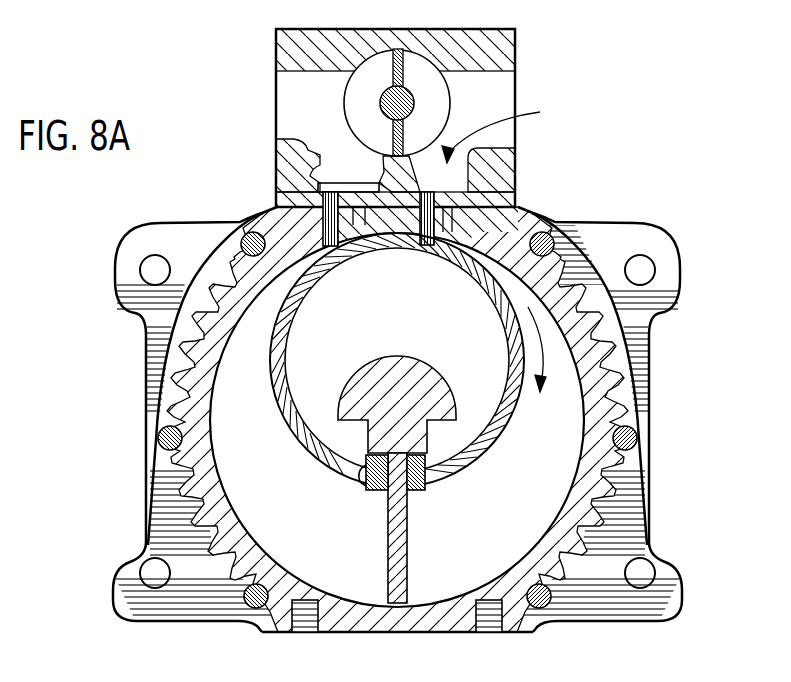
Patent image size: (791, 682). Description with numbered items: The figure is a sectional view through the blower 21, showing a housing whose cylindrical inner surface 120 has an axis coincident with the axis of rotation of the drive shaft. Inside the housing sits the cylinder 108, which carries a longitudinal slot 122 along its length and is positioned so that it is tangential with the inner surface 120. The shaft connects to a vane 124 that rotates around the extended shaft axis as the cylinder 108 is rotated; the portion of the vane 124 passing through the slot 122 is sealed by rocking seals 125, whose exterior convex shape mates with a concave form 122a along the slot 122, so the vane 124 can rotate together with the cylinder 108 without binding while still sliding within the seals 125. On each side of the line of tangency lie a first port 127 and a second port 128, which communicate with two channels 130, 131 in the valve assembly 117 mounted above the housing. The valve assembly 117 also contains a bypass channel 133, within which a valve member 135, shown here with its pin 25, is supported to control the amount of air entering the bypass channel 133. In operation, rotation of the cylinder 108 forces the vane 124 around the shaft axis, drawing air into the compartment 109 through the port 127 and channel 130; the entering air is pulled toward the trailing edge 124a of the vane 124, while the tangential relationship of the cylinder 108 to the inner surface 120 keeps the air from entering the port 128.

The blower 21 is at (104, 420).
The pivot pin 25 is at (408, 99).
The cylinder 108 is at (490, 450).
The compartment 109 is at (504, 527).
The valve assembly 117 is at (399, 113).
The inner surface 120 is at (573, 483).
The longitudinal slot 122 is at (381, 496).
The concave form 122a is at (358, 480).
The vane 124 is at (386, 368).
The trailing edge 124a is at (408, 583).
The rocking seals 125 is at (413, 495).
The first port 127 is at (457, 232).
The second port 128 is at (321, 221).
The channel 130 is at (485, 169).
The channel 131 is at (286, 145).
The bypass channel 133 is at (438, 104).
The valve member 135 is at (394, 72).